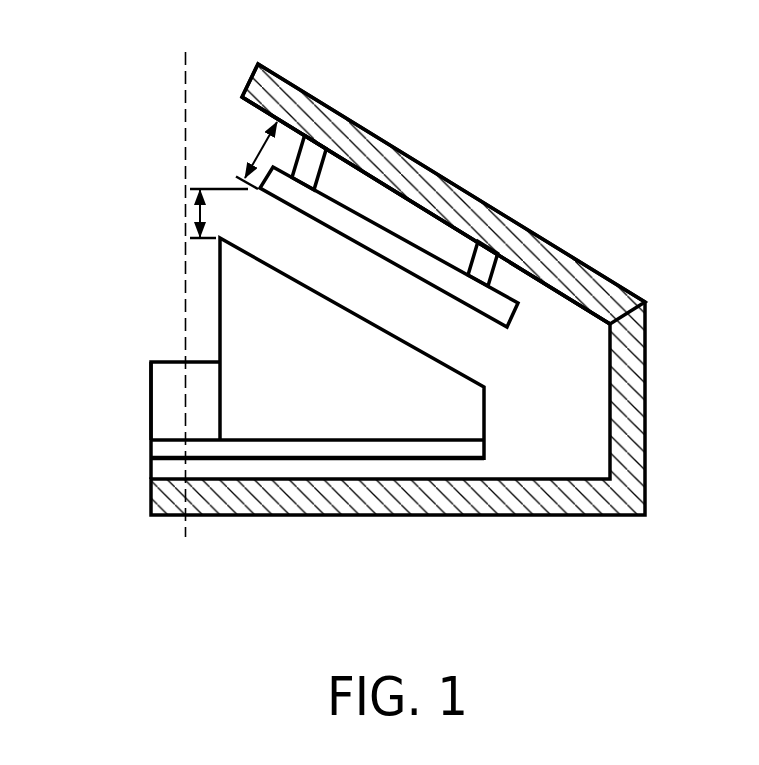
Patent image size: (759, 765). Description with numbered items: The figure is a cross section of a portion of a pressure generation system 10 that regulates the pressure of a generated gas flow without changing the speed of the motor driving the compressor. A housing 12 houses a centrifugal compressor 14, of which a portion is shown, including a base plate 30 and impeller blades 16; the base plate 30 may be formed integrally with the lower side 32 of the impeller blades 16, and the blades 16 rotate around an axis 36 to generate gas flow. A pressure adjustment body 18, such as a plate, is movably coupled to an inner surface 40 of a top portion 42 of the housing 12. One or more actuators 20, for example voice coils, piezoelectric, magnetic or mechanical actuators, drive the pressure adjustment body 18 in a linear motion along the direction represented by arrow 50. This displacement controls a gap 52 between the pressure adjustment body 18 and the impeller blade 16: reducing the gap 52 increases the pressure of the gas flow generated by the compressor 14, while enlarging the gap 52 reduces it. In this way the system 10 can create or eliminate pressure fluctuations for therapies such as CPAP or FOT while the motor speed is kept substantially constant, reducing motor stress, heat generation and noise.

The pressure generation system 10 is at (104, 86).
The housing 12 is at (637, 443).
The centrifugal compressor 14 is at (246, 571).
The impeller blade 16 is at (473, 398).
The pressure adjustment body 18 is at (502, 311).
The actuator 20 is at (485, 264).
The base plate 30 is at (352, 415).
The lower side of impeller blades 32 is at (297, 437).
The axis 36 is at (164, 402).
The inner surface of top portion of housing 40 is at (413, 200).
The top portion of housing 42 is at (540, 178).
The arrow indicating direction of motion 50 is at (258, 152).
The gap 52 is at (192, 213).